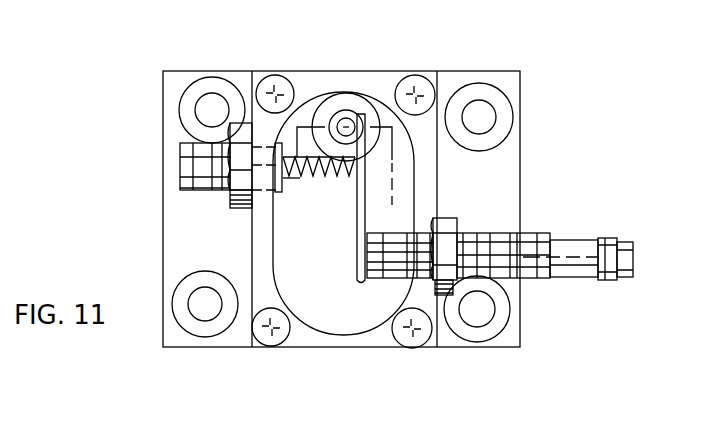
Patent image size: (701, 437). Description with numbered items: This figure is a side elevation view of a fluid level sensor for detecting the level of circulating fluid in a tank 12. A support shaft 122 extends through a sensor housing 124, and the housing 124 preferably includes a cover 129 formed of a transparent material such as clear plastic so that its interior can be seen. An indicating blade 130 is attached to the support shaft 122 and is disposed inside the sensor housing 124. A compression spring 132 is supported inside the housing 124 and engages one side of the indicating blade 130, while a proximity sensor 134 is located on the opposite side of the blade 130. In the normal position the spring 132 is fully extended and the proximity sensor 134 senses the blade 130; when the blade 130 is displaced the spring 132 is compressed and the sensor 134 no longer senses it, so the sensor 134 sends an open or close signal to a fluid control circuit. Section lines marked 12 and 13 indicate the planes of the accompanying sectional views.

The tank 12 is at (320, 17).
The section line 13- 13 is at (282, 164).
The support shaft 122 is at (350, 115).
The sensor housing 124 is at (365, 303).
The cover 129 is at (398, 176).
The indicating blade 130 is at (362, 224).
The compression spring 132 is at (325, 178).
The proximity sensor 134 is at (578, 240).